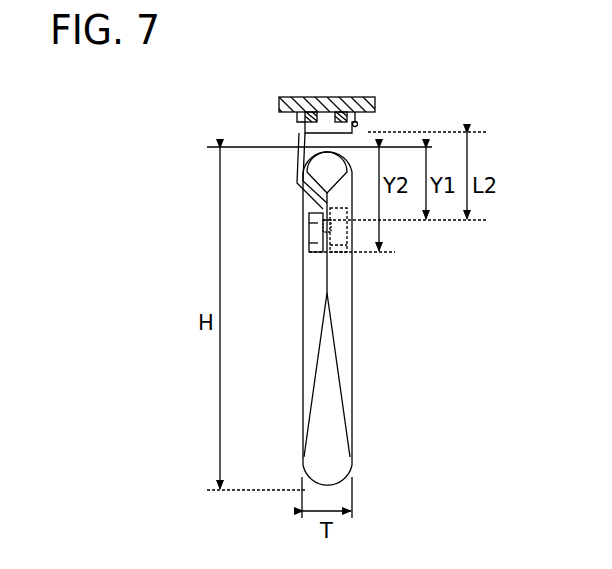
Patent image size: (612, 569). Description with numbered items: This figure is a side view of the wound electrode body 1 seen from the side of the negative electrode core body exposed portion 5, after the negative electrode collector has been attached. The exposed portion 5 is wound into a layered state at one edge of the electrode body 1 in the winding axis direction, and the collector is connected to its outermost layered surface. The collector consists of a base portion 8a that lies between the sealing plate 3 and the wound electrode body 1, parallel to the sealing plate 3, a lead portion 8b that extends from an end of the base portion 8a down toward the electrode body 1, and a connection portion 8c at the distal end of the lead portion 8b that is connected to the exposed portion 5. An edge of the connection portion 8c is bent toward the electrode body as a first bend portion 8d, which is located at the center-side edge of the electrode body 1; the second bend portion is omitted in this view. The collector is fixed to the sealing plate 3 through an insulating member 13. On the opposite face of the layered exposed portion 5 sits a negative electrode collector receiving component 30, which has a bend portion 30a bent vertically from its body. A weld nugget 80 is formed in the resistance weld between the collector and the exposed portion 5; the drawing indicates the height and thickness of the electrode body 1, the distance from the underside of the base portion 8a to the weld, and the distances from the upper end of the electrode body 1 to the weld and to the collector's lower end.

The wound electrode body 1 is at (303, 357).
The sealing plate 3 is at (335, 97).
The negative electrode core body exposed portion 5 is at (331, 428).
The base portion 8a is at (297, 117).
The lead portion 8b is at (298, 184).
The connection portion 8c is at (309, 248).
The first bend portion 8d is at (309, 216).
The insulating member 13 is at (358, 123).
The negative electrode collector receiving component 30 is at (337, 258).
The bend portion 30a is at (333, 249).
The weld nugget 80 is at (323, 229).